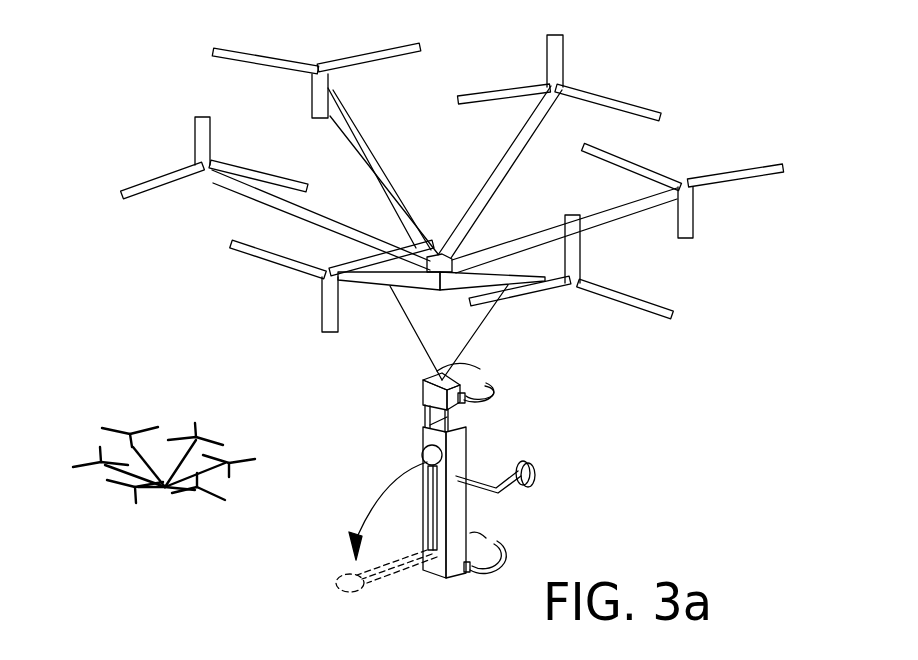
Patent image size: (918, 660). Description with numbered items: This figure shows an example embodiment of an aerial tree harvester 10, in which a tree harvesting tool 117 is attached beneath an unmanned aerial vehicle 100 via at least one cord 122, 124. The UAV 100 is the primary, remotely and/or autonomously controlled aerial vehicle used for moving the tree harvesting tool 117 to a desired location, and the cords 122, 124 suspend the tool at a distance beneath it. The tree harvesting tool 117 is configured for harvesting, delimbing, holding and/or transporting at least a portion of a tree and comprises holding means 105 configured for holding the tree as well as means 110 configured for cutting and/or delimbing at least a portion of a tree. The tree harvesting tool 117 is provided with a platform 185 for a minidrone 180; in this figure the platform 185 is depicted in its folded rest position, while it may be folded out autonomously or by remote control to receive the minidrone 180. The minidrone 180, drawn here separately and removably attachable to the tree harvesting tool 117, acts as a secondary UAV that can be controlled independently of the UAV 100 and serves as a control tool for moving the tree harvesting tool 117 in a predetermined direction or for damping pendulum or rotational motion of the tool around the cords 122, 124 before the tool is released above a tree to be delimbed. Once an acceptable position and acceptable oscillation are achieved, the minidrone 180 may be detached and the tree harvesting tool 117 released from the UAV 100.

The aerial tree harvester 10 is at (110, 113).
The unmanned aerial vehicle (UAV) 100 is at (716, 67).
The holding means 105 is at (497, 393).
The means configured for cutting and/or delimbing 110 is at (460, 453).
The tree harvesting tool 117 is at (560, 512).
The cord 122 is at (468, 347).
The cord 124 is at (415, 333).
The minidrone 180 is at (124, 414).
The platform 185 is at (430, 497).